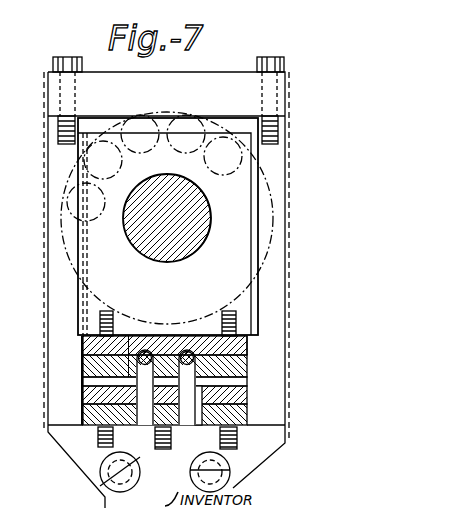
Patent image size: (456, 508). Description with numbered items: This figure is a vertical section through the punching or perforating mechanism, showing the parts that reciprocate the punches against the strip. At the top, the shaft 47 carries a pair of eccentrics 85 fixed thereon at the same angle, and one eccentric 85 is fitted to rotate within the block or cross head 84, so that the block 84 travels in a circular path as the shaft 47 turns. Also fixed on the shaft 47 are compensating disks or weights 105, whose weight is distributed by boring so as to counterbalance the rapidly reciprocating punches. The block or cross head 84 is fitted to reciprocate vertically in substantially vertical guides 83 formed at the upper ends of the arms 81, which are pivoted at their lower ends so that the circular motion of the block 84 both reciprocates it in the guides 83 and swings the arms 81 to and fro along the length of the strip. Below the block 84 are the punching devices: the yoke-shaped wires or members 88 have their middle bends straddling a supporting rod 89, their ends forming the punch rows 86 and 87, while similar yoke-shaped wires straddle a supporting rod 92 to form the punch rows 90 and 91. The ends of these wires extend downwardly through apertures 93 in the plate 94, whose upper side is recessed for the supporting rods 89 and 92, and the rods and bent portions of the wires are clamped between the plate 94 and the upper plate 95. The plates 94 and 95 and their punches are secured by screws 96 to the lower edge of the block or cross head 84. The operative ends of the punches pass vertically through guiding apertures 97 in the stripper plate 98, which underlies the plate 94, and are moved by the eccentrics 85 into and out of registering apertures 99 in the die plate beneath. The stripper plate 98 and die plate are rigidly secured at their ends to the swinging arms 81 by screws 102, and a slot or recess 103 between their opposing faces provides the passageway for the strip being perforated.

The shaft 47 is at (147, 237).
The arms 81 is at (105, 499).
The vertical guides 83 is at (52, 162).
The block or cross head 84 is at (95, 246).
The eccentrics 85 is at (198, 186).
The row of punches 86 is at (148, 346).
The row of punches 87 is at (187, 350).
The yoke-shaped wires 88 is at (160, 348).
The supporting rod 89 is at (150, 348).
The row of punches 90 is at (220, 436).
The row of punches 91 is at (172, 440).
The supporting rod 92 is at (222, 338).
The apertures 93 is at (86, 378).
The plate 94 is at (247, 368).
The upper plate 95 is at (243, 342).
The screws 96 is at (86, 349).
The guiding apertures 97 is at (86, 396).
The stripper plate 98 is at (247, 403).
The registering apertures 99 is at (114, 436).
The screws 102 is at (100, 447).
The slot or recess 103 is at (247, 418).
The compensating disks or weights 105 is at (278, 236).